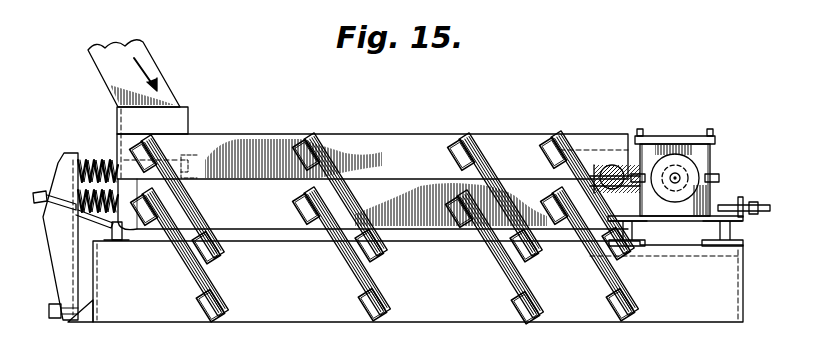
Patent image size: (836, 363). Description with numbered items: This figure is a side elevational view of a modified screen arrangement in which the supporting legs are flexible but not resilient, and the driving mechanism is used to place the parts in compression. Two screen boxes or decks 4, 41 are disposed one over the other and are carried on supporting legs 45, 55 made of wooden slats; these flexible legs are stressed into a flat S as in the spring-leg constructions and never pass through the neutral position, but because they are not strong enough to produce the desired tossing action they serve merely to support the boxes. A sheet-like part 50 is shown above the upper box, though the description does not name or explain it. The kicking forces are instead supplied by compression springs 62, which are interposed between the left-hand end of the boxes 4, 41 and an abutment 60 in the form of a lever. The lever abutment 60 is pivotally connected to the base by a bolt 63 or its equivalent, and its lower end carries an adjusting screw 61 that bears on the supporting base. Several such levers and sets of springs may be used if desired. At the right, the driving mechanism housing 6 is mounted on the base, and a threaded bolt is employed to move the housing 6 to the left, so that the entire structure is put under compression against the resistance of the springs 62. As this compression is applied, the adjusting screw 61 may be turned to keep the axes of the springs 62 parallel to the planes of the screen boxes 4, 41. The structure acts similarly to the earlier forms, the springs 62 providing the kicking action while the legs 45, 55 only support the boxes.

The screen box 4 is at (400, 122).
The screen box 41 is at (285, 228).
The supporting leg 45 is at (182, 207).
The supporting leg 55 is at (352, 279).
The sheet 50 is at (165, 88).
The abutment 60 is at (58, 250).
The adjusting screw 61 is at (55, 320).
The compression springs 62 is at (95, 159).
The bolt 63 is at (44, 200).
The driving mechanism housing 6 is at (704, 158).